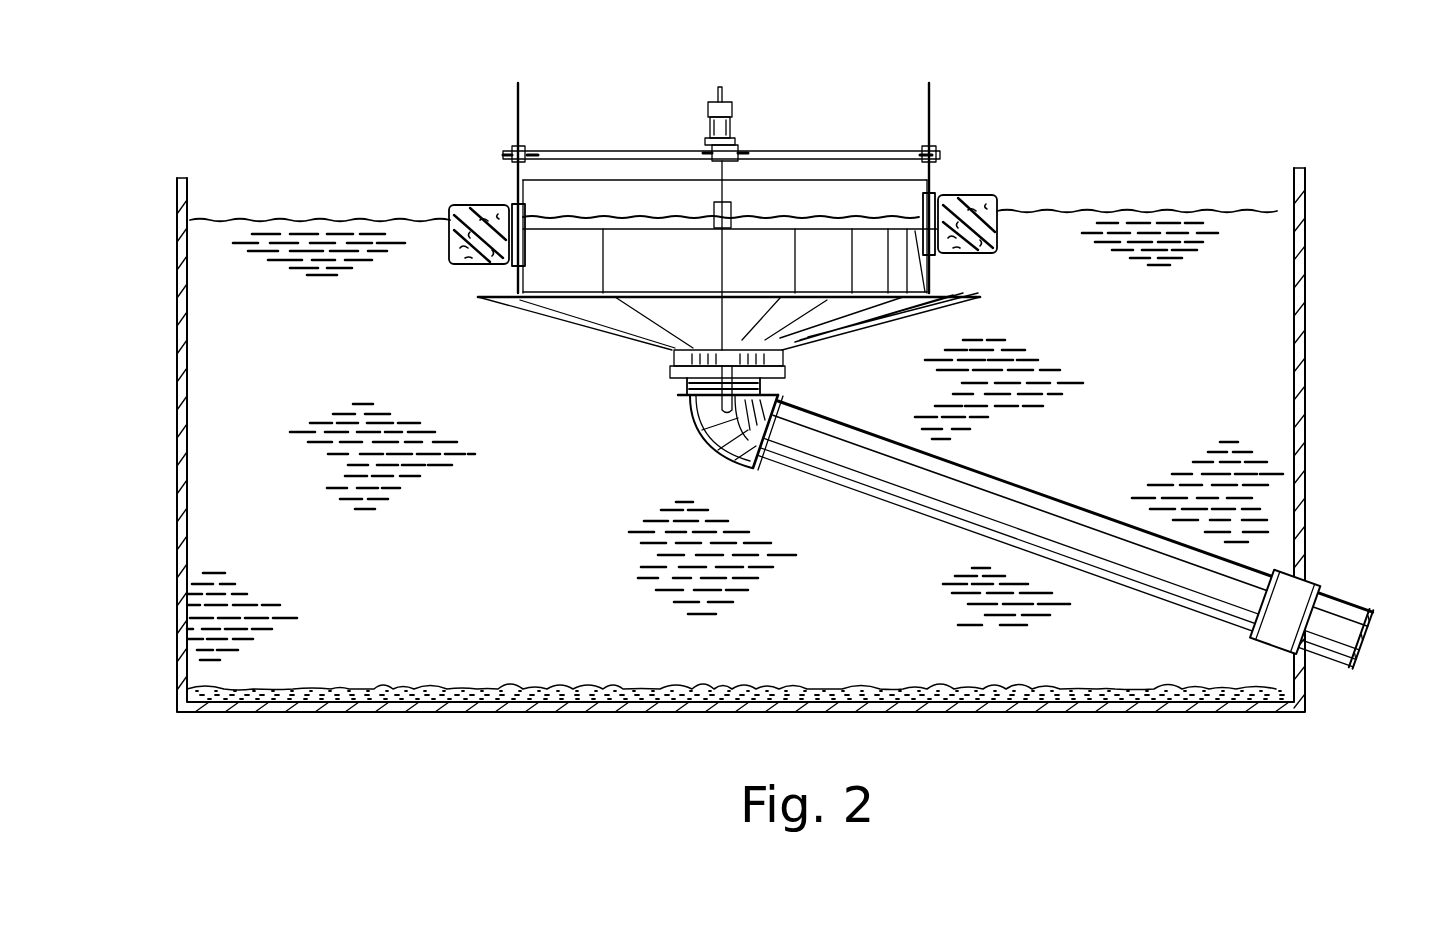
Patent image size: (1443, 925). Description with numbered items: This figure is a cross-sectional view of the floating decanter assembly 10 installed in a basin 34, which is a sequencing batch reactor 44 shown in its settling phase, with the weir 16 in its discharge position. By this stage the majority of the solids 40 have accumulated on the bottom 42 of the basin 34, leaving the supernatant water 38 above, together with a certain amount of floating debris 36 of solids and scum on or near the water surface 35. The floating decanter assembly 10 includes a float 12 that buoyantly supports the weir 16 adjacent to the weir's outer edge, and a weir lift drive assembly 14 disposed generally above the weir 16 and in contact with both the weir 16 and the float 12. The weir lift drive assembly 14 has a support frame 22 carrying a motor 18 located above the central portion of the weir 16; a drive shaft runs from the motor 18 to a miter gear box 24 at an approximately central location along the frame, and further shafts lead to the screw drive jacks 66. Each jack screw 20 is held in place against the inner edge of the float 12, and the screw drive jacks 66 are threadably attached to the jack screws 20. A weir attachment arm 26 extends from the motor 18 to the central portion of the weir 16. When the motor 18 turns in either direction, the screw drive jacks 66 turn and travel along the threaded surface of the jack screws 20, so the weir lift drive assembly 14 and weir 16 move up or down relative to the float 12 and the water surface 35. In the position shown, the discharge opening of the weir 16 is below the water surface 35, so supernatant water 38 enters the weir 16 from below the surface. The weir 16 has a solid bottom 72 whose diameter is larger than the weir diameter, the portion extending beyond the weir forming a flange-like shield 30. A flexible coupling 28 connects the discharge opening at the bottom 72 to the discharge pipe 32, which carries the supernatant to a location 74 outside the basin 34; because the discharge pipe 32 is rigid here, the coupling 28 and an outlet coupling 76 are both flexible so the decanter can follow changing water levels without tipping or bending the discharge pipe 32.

The floating decanter assembly 10 is at (482, 178).
The float 12 is at (450, 220).
The weir lift drive assembly 14 is at (813, 150).
The weir 16 is at (715, 338).
The motor 18 is at (733, 100).
The jack screws 20 is at (510, 193).
The support frame 22 is at (644, 149).
The miter gear box 24 is at (712, 150).
The weir attachment arm 26 is at (733, 208).
The coupling 28 is at (698, 440).
The shield 30 is at (593, 325).
The discharge pipe 32 is at (978, 475).
The basin 34 is at (292, 148).
The water surface 35 is at (633, 215).
The floating debris 36 is at (296, 218).
The supernatant water 38 is at (562, 527).
The solids 40 is at (512, 688).
The bottom 42 is at (502, 713).
The sequencing batch reactor 44 is at (175, 440).
The screw drive jacks 66 is at (512, 153).
The bottom 72 is at (818, 338).
The location 74 is at (1428, 663).
The outlet coupling 76 is at (1309, 580).